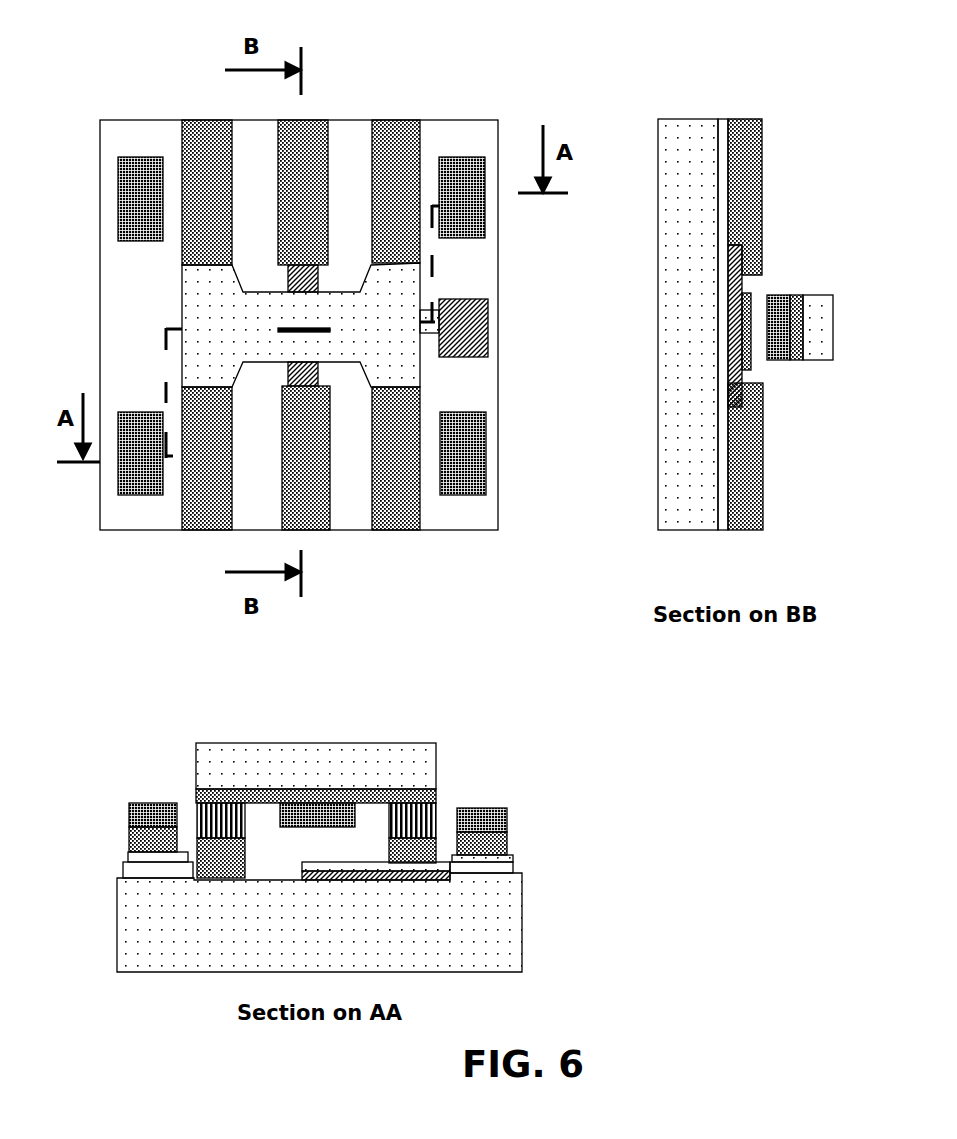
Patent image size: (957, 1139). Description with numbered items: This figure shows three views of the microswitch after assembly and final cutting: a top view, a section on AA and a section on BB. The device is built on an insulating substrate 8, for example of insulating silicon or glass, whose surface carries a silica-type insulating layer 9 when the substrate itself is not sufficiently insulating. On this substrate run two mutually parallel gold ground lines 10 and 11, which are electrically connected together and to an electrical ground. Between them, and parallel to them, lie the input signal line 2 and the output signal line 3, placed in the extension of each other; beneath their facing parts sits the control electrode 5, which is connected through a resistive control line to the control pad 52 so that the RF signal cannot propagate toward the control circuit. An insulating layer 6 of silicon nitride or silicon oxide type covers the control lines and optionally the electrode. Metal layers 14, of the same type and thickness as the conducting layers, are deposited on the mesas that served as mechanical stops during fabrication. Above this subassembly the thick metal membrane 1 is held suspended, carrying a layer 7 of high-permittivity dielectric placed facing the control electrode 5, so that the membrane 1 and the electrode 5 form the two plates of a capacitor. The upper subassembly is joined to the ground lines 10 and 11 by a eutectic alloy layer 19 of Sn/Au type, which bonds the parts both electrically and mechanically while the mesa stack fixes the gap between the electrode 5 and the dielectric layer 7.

The membrane 1 is at (390, 305).
The input signal line 2 is at (300, 518).
The output signal line 3 is at (305, 148).
The control electrode 5 is at (745, 378).
The insulating layer 6 is at (513, 862).
The high-permittivity dielectric layer 7 is at (330, 800).
The insulating substrate 8 is at (685, 140).
The insulating layer 9 is at (726, 510).
The ground line 10 is at (400, 505).
The ground line 11 is at (208, 520).
The metal layers 14 is at (486, 480).
The eutectic alloy layer 19 is at (197, 803).
The control pad 52 is at (485, 340).